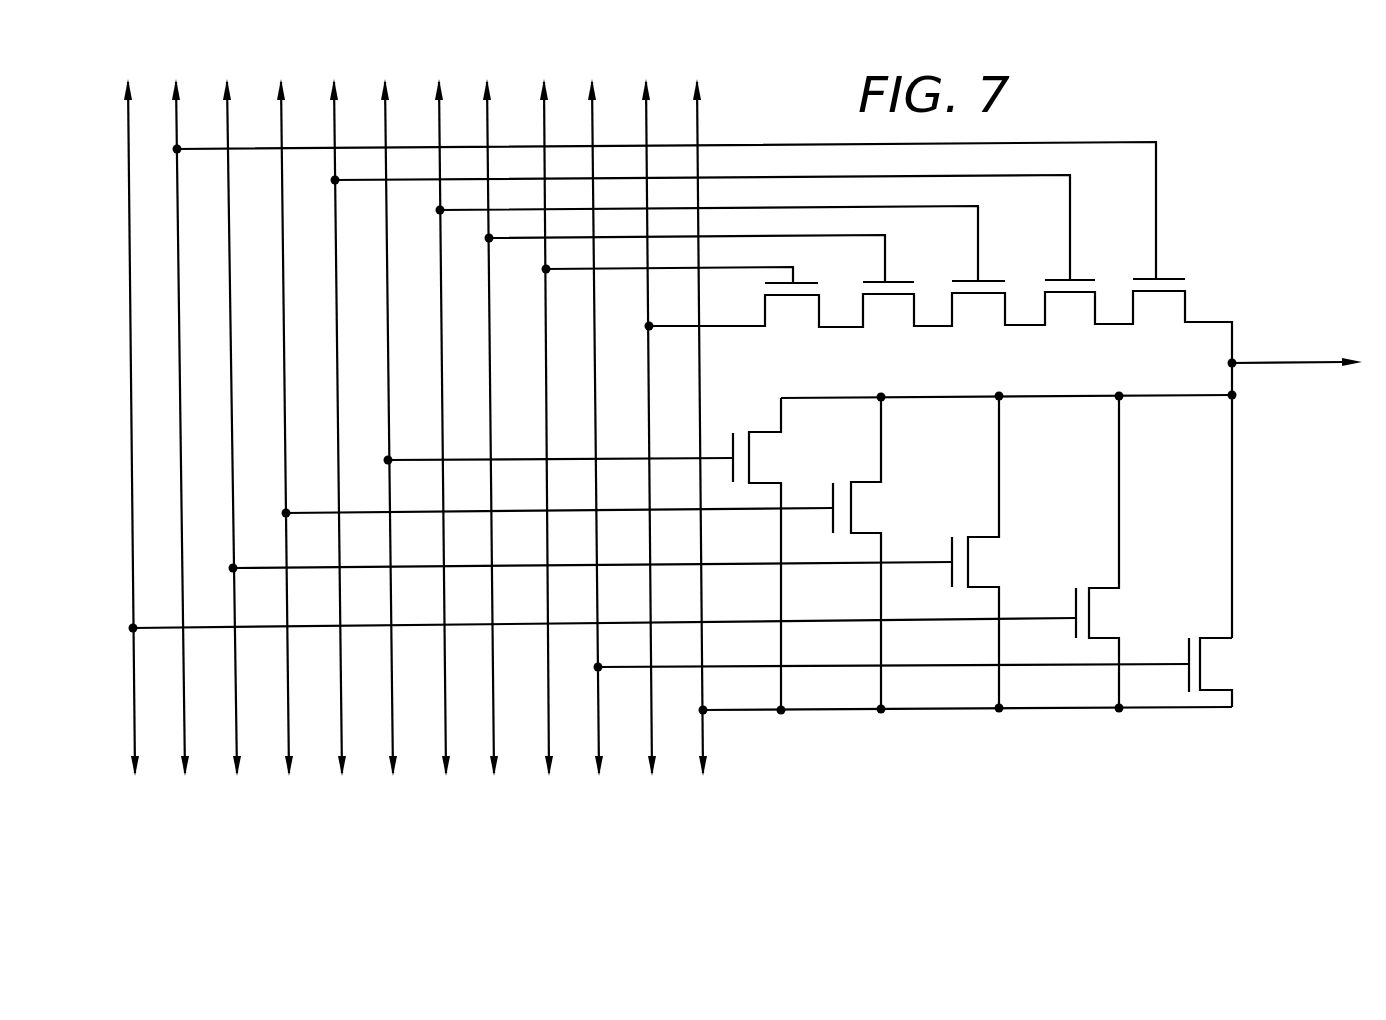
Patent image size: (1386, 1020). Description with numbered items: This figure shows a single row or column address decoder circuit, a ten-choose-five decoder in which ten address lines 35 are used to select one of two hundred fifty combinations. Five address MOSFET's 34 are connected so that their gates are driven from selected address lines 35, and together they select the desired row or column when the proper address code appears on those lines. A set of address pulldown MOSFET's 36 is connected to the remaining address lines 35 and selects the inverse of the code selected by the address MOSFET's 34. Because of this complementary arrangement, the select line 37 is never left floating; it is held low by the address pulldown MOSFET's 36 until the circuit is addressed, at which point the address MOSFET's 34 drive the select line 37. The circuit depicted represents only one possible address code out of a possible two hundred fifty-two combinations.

The address MOSFET's 34 is at (1172, 302).
The address lines 35 is at (182, 88).
The address pulldown MOSFET's 36 is at (1220, 648).
The select line 37 is at (1293, 362).